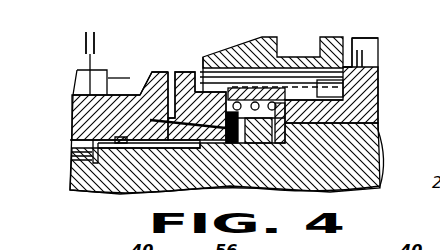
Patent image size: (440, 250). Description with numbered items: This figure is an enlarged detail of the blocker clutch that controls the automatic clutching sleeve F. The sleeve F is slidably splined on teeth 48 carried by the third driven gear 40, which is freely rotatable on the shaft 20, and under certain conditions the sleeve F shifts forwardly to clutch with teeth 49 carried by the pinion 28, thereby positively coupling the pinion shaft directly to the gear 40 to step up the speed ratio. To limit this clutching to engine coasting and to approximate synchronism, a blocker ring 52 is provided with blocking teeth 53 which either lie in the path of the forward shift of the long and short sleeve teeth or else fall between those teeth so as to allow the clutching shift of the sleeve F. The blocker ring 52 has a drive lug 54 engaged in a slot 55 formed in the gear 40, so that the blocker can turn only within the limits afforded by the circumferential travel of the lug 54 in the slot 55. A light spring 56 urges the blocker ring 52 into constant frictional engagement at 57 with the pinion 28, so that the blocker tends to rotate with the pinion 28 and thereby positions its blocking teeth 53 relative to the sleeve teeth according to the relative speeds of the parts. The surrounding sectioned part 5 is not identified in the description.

The frame body 5 is at (227, 115).
The shaft 20 is at (358, 165).
The pinion 28 is at (75, 78).
The third driven gear 40 is at (371, 50).
The teeth 48 is at (293, 79).
The teeth 49 is at (157, 72).
The blocker ring 52 is at (142, 146).
The blocking teeth 53 is at (187, 72).
The drive lug 54 is at (207, 100).
The slot 55 is at (230, 97).
The spring 56 is at (284, 112).
The frictional engagement 57 is at (175, 128).
The automatic clutching sleeve F is at (250, 50).